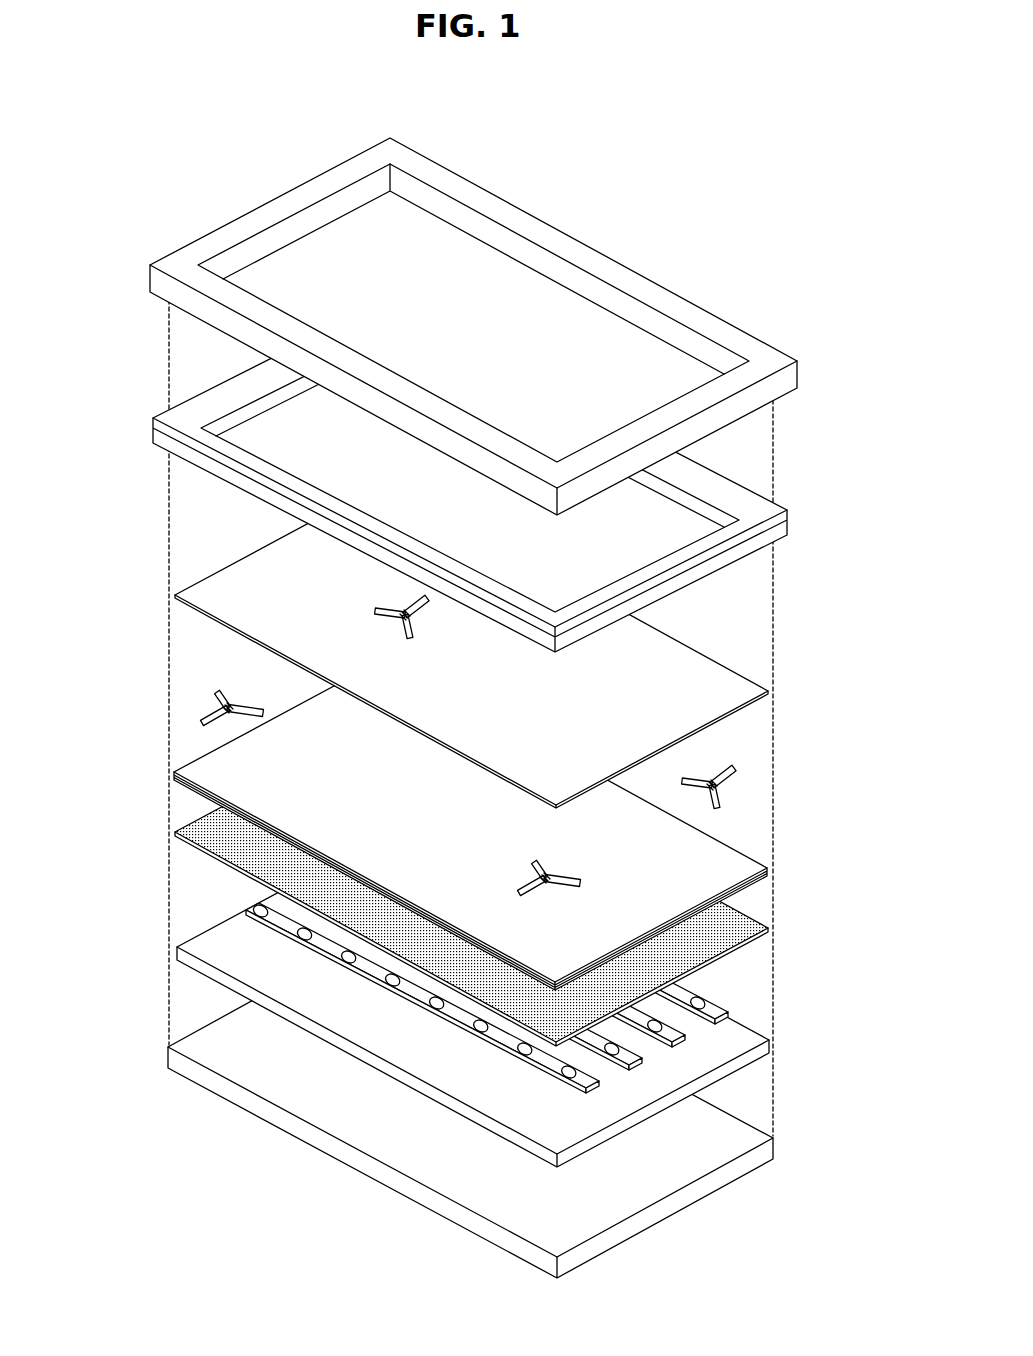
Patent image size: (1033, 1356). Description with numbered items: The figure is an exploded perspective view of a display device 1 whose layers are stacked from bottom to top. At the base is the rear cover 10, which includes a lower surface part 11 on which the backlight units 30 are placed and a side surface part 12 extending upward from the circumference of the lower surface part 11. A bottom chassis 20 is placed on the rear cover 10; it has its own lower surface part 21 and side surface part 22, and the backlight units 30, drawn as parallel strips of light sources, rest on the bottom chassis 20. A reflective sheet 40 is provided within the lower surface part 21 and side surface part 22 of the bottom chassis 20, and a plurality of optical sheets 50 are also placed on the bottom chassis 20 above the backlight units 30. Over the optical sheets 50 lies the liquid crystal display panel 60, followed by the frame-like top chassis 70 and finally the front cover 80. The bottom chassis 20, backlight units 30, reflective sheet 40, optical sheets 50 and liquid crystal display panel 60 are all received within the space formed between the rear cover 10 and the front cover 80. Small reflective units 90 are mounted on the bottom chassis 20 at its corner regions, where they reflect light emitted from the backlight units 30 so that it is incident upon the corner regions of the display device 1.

The display device 1 is at (692, 180).
The rear cover 10 is at (441, 1103).
The lower surface part 11 is at (437, 1163).
The side surface part 12 is at (310, 1137).
The bottom chassis 20 is at (527, 1000).
The lower surface part 21 is at (713, 1042).
The side surface part 22 is at (831, 1013).
The backlight units 30 is at (240, 906).
The reflective sheet 40 is at (175, 832).
The optical sheets 50 is at (173, 773).
The liquid crystal display panel 60 is at (175, 595).
The top chassis 70 is at (153, 423).
The front cover 80 is at (150, 280).
The reflective units 90 is at (375, 611).